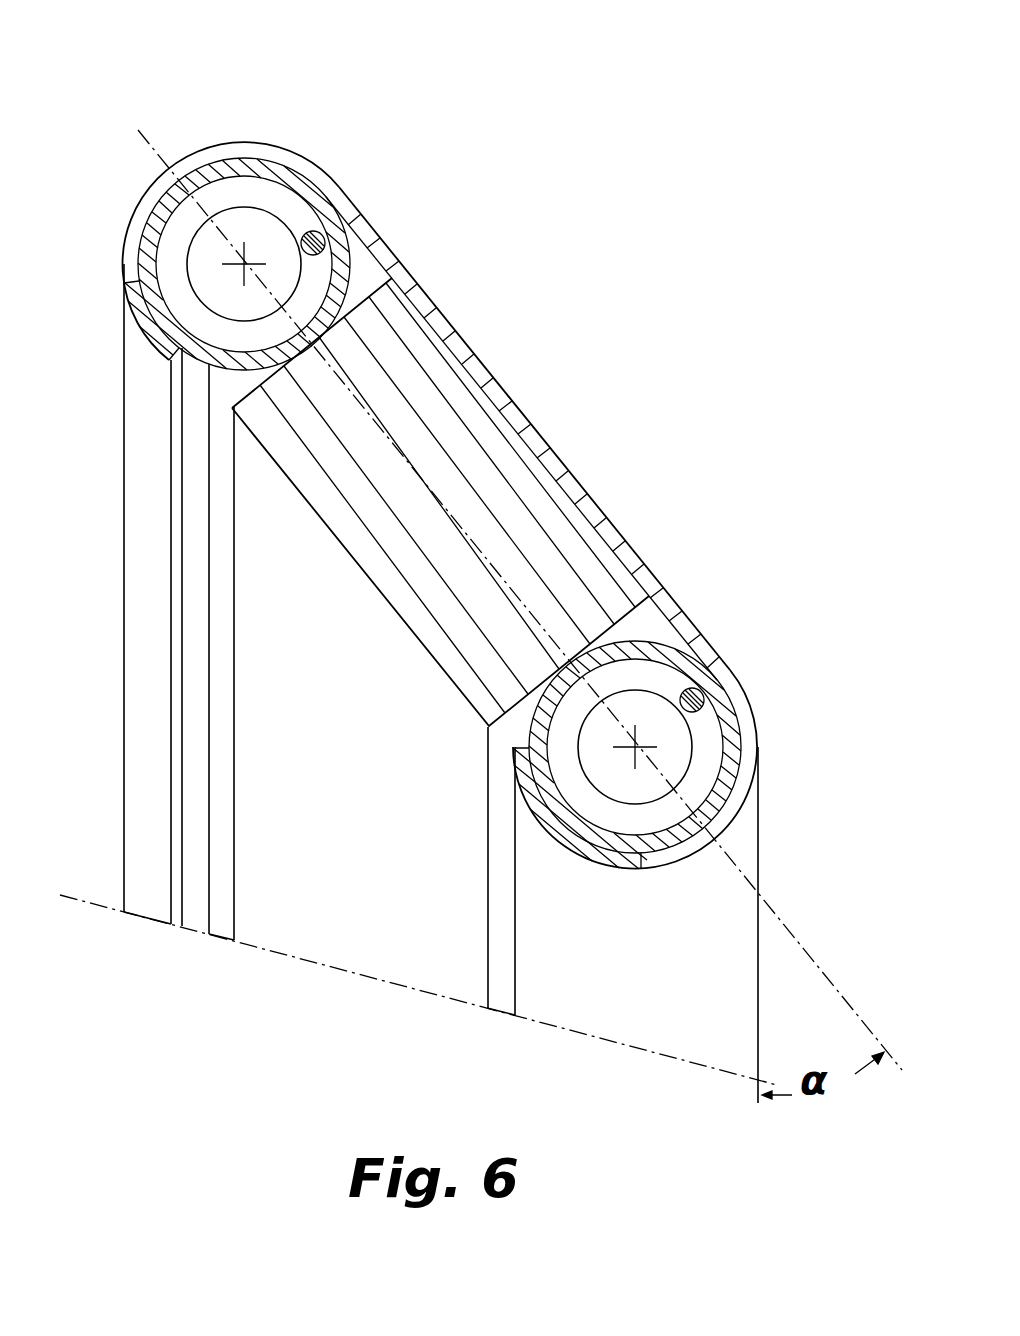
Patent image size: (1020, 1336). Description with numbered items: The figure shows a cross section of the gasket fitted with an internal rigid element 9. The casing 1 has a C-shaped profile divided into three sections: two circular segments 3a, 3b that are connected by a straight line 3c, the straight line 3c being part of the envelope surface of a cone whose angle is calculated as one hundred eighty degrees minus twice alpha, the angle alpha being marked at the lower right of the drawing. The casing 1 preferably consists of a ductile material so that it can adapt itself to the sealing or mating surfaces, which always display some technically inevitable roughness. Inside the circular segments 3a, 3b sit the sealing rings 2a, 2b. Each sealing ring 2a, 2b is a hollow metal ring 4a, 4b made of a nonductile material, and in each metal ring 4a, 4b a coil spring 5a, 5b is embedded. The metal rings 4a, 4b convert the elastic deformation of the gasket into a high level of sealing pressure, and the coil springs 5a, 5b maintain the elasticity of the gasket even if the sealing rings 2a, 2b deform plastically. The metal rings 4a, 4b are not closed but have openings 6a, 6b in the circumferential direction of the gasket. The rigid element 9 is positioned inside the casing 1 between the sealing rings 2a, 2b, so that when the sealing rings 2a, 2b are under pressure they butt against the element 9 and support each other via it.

The casing 1 is at (572, 470).
The sealing ring 2a is at (272, 236).
The sealing ring 2b is at (633, 712).
The circular segment 3a is at (238, 135).
The circular segment 3b is at (768, 750).
The straight line 3c is at (398, 245).
The metal ring 4a is at (150, 180).
The metal ring 4b is at (700, 804).
The coil spring 5a is at (324, 236).
The coil spring 5b is at (702, 694).
The opening 6a is at (185, 340).
The opening 6b is at (535, 742).
The rigid element 9 is at (440, 400).